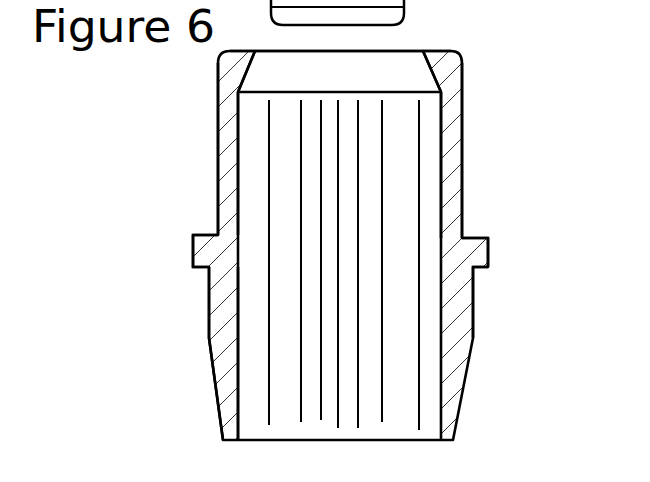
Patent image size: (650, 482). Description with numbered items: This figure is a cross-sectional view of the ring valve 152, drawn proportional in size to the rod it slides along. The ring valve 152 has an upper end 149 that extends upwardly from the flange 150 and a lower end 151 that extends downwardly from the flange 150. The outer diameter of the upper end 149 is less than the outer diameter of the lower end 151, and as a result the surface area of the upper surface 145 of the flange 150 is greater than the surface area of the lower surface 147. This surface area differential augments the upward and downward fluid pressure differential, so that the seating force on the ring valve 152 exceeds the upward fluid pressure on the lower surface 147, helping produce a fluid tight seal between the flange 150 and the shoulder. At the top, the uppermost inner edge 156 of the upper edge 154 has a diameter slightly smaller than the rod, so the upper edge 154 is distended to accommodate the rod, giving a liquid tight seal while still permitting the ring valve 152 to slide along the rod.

The upper surface 145 is at (478, 238).
The lower surface 147 is at (478, 267).
The upper end 149 is at (227, 162).
The flange 150 is at (198, 253).
The lower end 151 is at (220, 330).
The ring valve 152 is at (453, 197).
The upper edge 154 is at (443, 75).
The uppermost inner edge 156 is at (422, 55).